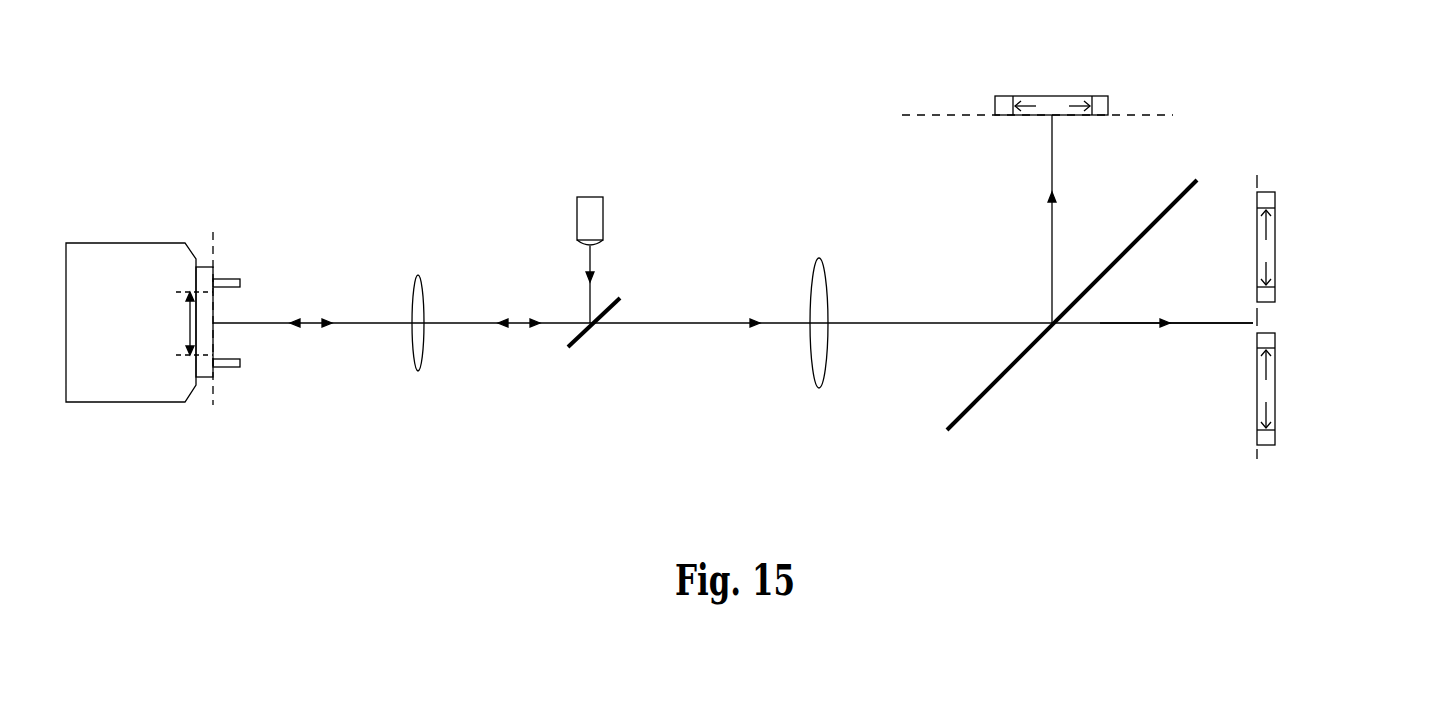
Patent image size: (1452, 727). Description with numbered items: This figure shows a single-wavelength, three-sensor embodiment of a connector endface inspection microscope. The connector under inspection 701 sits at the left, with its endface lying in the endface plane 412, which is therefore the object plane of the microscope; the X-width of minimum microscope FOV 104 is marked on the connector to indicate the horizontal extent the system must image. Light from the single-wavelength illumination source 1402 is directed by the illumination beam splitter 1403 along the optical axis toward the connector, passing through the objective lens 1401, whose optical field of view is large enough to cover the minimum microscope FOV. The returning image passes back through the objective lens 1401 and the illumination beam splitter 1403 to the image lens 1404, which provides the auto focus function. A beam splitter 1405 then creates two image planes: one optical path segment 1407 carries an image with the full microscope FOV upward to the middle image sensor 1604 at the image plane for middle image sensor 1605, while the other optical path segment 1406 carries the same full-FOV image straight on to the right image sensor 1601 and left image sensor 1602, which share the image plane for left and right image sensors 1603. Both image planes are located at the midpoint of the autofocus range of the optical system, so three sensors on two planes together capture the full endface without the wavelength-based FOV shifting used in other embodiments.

The connector under inspection 701 is at (146, 240).
The X-width of minimum microscope FOV 104 is at (190, 323).
The endface plane 412 is at (213, 418).
The objective lens 1401 is at (417, 270).
The single-wavelength illumination source 1402 is at (590, 189).
The illumination beam splitter 1403 is at (593, 335).
The image lens 1404 is at (820, 393).
The beam splitter 1405 is at (973, 417).
The optical path segment 1406 is at (1151, 364).
The optical path segment 1407 is at (947, 219).
The right image sensor 1601 is at (1282, 250).
The left image sensor 1602 is at (1282, 390).
The image plane for left and right image sensors 1603 is at (1256, 461).
The middle image sensor 1604 is at (1050, 91).
The image plane for middle image sensor 1605 is at (902, 115).